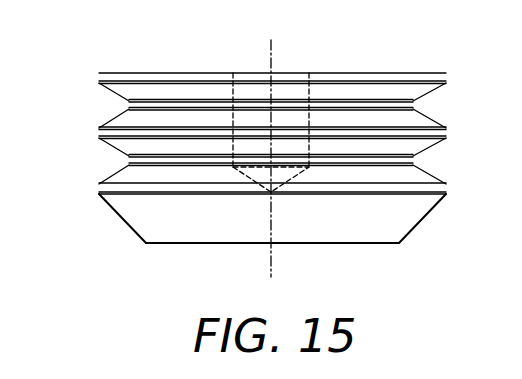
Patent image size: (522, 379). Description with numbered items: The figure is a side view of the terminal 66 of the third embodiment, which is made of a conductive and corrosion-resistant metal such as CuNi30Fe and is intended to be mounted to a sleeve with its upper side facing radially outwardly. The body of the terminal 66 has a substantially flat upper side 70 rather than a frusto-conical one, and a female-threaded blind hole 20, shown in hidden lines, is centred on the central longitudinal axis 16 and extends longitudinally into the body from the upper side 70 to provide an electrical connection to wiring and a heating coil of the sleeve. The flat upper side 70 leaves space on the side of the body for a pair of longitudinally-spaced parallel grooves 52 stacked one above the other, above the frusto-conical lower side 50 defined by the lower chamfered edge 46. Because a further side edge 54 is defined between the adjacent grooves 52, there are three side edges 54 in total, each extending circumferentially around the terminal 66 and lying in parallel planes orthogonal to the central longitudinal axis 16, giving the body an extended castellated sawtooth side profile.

The terminal 66 is at (455, 56).
The central longitudinal axis 16 is at (273, 47).
The female-threaded blind hole 20 is at (255, 85).
The upper side 70 is at (158, 73).
The grooves 52 is at (415, 104).
The side edges 54 is at (97, 76).
The lower chamfered edge 46 is at (424, 219).
The lower side 50 is at (345, 244).